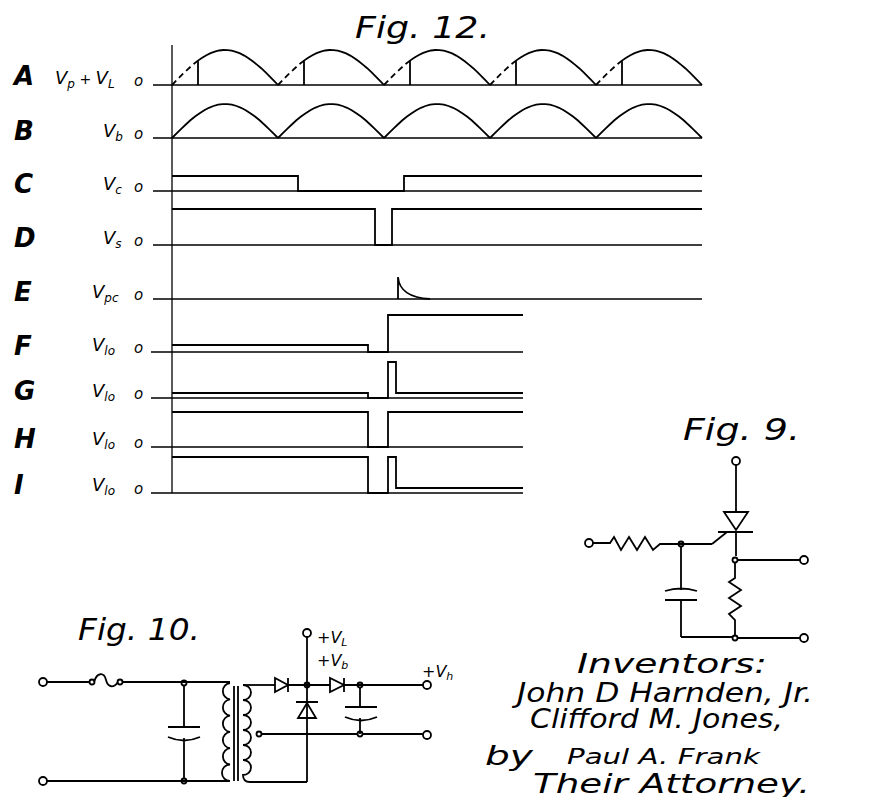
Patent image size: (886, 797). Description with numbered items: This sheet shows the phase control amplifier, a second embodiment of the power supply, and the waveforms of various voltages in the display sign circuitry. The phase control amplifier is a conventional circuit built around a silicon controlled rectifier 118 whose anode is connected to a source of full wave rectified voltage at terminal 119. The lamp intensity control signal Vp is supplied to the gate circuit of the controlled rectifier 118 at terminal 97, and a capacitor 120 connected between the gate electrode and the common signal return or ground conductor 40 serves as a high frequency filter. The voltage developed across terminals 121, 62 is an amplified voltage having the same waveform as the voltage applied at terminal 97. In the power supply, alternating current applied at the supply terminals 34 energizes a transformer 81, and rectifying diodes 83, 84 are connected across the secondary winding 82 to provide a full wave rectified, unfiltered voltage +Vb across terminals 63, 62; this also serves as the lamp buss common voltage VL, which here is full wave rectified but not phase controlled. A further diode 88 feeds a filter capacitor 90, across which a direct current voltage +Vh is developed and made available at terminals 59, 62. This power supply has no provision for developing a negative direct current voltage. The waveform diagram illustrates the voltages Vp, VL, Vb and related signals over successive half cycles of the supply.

In FIG. 10, the alternating current supply terminals 34 is at (70, 684).
In FIG. 9, the common signal return or ground conductor 40 is at (758, 637).
In FIG. 10, the common signal return or ground conductor 40 is at (398, 735).
In FIG. 10, the terminal 59 is at (431, 687).
In FIG. 9, the terminal 62 is at (803, 634).
In FIG. 10, the terminal 62 is at (430, 738).
In FIG. 10, the terminal 63 is at (309, 629).
In FIG. 10, the transformer 81 is at (234, 670).
In FIG. 10, the secondary winding 82 is at (262, 765).
In FIG. 10, the rectifying diode 83 is at (282, 679).
In FIG. 10, the rectifying diode 84 is at (312, 718).
In FIG. 10, the rectifier diode 88 is at (346, 680).
In FIG. 10, the filter capacitor 90 is at (375, 704).
In FIG. 9, the terminal 97 is at (590, 548).
In FIG. 9, the silicon controlled rectifier 118 is at (722, 518).
In FIG. 9, the terminal 119 is at (740, 461).
In FIG. 9, the capacitor 120 is at (672, 600).
In FIG. 9, the terminal 121 is at (803, 556).